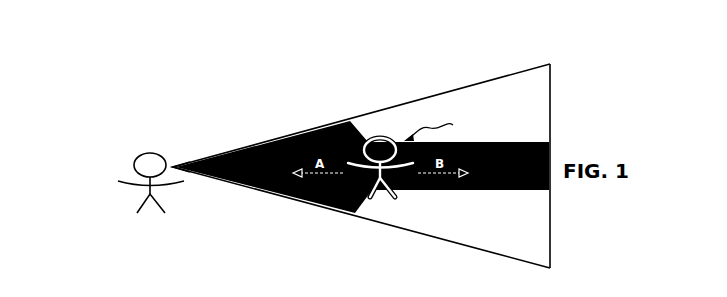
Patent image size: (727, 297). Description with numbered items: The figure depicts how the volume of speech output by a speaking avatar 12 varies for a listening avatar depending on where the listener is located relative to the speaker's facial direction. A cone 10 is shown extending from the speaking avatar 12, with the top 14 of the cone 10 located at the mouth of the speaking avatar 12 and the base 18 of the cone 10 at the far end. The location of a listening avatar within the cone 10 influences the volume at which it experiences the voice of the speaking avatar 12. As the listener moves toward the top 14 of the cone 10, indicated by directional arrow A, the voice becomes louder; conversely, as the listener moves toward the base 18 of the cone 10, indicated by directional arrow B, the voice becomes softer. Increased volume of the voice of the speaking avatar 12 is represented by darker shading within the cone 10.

The cone 10 is at (370, 112).
The speaking avatar 12 is at (104, 179).
The top of the cone 14 is at (173, 166).
The base of the cone 18 is at (552, 90).